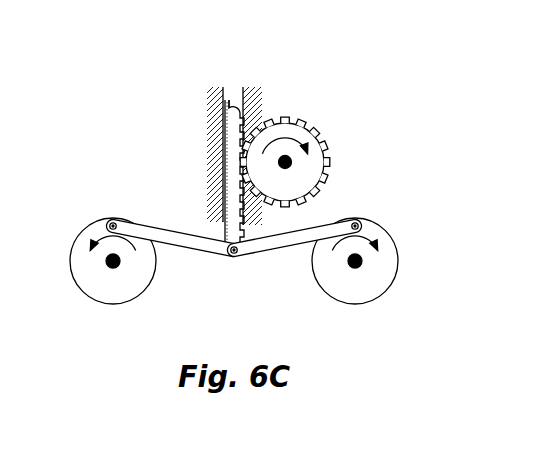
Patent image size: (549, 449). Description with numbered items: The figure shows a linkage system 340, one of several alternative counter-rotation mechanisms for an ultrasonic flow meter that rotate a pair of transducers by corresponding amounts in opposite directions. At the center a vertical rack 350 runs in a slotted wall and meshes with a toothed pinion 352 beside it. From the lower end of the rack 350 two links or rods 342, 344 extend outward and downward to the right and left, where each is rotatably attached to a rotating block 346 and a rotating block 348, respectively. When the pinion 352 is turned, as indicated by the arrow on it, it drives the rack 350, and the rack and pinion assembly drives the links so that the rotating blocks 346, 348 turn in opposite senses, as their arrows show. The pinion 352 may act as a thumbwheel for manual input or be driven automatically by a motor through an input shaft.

The linkage system 340 is at (233, 171).
The link or rod 342 is at (283, 247).
The link or rod 344 is at (190, 255).
The rotating block 346 is at (370, 278).
The rotating block 348 is at (93, 278).
The rack 350 is at (232, 163).
The pinion 352 is at (308, 176).